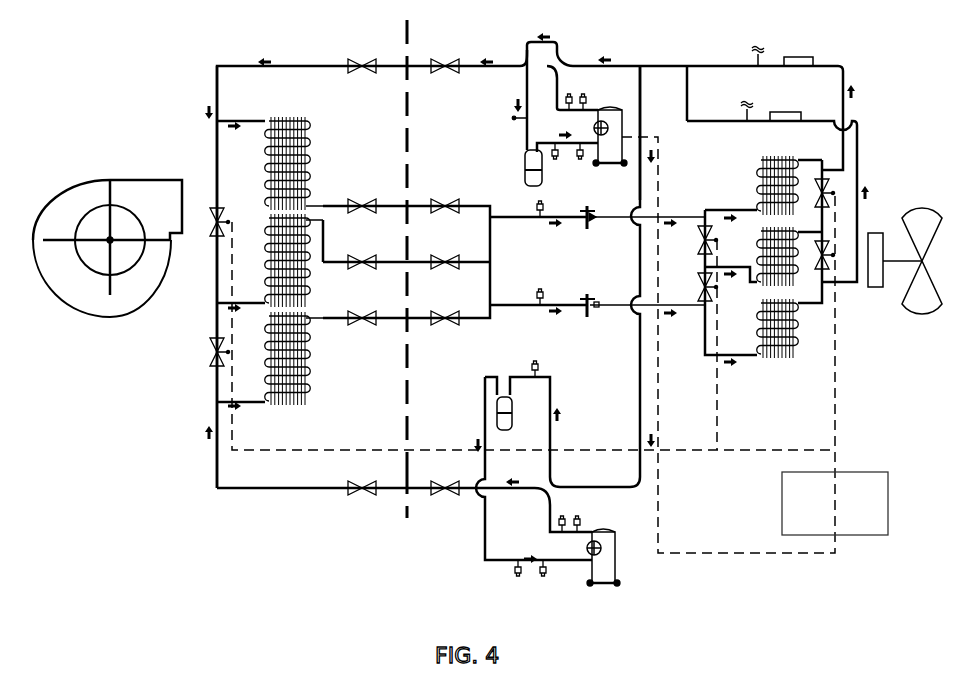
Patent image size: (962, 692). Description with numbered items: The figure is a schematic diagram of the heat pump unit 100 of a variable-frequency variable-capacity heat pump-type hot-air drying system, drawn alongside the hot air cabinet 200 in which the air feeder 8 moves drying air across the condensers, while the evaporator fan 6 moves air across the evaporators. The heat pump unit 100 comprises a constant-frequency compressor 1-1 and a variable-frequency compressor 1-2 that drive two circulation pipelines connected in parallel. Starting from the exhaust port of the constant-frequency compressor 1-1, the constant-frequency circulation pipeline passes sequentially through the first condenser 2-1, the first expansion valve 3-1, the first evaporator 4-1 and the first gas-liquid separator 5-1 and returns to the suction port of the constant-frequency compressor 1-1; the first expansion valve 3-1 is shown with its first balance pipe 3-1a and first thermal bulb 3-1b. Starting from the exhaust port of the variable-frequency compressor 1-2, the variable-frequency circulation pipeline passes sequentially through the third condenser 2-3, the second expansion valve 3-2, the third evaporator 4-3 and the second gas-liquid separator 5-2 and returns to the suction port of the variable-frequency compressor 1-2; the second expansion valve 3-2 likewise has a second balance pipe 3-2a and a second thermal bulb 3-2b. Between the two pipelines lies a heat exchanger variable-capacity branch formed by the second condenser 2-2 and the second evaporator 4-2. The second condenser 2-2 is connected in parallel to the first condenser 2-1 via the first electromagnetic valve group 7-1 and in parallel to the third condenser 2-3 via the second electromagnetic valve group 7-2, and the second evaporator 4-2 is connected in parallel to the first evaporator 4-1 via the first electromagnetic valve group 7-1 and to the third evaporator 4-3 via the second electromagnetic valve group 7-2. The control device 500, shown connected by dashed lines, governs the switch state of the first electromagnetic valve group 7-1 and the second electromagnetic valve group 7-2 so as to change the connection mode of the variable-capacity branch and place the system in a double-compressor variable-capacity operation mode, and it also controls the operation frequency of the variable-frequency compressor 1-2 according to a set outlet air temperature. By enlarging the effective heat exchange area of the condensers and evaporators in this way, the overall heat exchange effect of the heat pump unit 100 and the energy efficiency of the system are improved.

The air feeder 8 is at (107, 234).
The second electromagnetic valve group 7-2 is at (517, 213).
The first electromagnetic valve group 7-1 is at (518, 303).
The third condenser 2-3 is at (275, 163).
The second condenser 2-2 is at (274, 260).
The first condenser 2-1 is at (275, 358).
The third evaporator 4-3 is at (760, 185).
The second evaporator 4-2 is at (760, 256).
The first evaporator 4-1 is at (761, 328).
The second gas-liquid separator 5-2 is at (519, 168).
The first gas-liquid separator 5-1 is at (520, 413).
The variable-frequency compressor 1-2 is at (610, 147).
The constant-frequency compressor 1-1 is at (603, 568).
The second expansion valve 3-2 is at (588, 227).
The first expansion valve 3-1 is at (588, 314).
The second thermal bulb 3-2b is at (756, 43).
The second balance pipe 3-2a is at (797, 51).
The first thermal bulb 3-1b is at (744, 100).
The first balance pipe 3-1a is at (783, 107).
The evaporator fan 6 is at (905, 261).
The control device 500 is at (835, 503).
The hot air cabinet 200 is at (213, 253).
The heat pump unit 100 is at (667, 109).